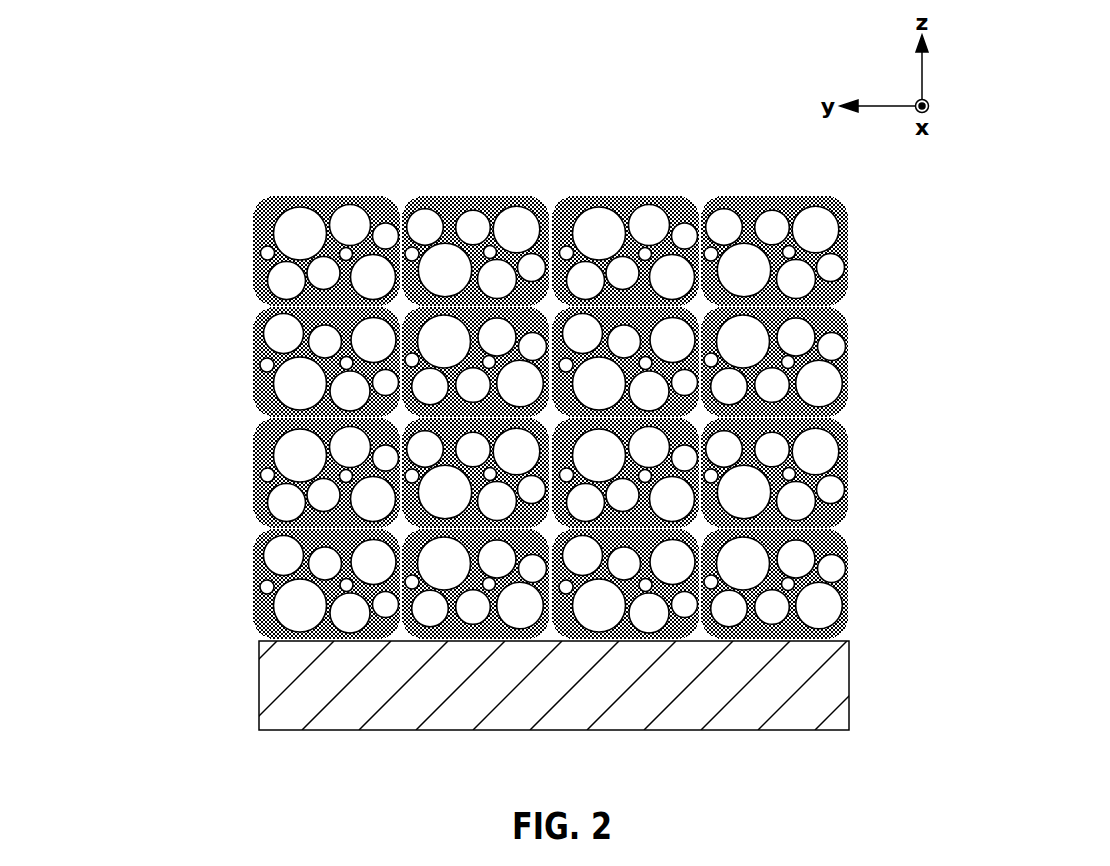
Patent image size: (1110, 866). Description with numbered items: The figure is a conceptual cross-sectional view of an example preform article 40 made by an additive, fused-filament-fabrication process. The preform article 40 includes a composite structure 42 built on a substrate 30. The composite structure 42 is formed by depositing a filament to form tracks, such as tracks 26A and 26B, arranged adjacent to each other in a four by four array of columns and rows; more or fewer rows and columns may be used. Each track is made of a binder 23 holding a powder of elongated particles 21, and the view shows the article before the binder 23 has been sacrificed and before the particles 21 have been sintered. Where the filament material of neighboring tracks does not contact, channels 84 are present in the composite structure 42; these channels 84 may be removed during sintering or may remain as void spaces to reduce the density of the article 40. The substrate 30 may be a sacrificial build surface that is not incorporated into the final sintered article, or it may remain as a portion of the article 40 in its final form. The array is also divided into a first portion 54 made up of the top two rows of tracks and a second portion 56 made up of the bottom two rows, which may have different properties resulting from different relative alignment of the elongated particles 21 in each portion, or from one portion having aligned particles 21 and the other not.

The preform article 40 is at (116, 143).
The composite structure 42 is at (890, 207).
The first portion 54 is at (238, 202).
The second portion 56 is at (238, 640).
The track 26A is at (260, 207).
The track 26B is at (487, 195).
The binder 23 is at (322, 205).
The elongated particles 21 is at (347, 223).
The channels 84 is at (700, 305).
The substrate 30 is at (278, 685).